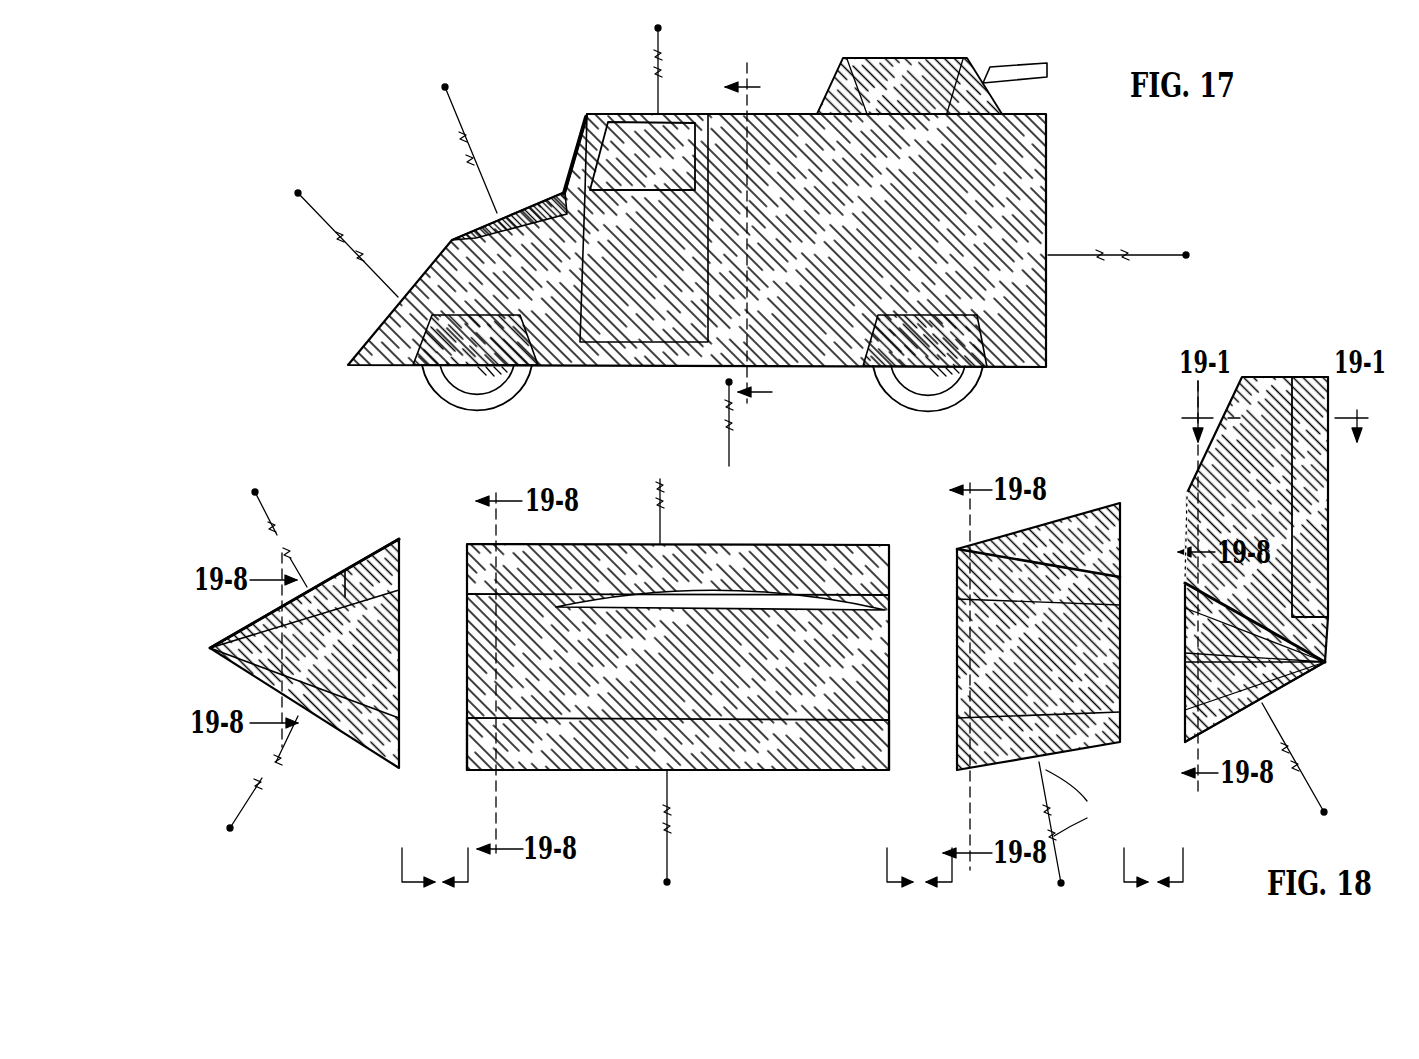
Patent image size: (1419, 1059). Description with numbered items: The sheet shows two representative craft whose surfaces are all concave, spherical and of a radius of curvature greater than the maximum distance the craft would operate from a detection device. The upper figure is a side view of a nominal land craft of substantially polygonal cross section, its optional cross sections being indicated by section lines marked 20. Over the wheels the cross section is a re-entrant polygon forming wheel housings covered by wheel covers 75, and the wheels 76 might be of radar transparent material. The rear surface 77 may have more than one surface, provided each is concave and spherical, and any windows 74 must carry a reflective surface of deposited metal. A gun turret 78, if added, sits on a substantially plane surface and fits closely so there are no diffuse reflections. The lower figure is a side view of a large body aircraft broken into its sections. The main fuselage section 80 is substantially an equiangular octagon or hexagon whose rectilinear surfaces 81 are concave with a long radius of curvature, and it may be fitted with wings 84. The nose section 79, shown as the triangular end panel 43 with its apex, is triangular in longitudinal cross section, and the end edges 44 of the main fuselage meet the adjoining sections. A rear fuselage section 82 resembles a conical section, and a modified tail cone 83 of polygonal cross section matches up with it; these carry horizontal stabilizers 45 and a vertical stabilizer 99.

In FIG. 17, the section line indicator 20 is at (320, 207).
In FIG. 18, the section line indicator 20 is at (260, 496).
In FIG. 17, the windows 74 is at (617, 140).
In FIG. 17, the wheel covers 75 is at (530, 370).
In FIG. 17, the wheels 76 is at (465, 382).
In FIG. 17, the rear surface 77 is at (1047, 153).
In FIG. 17, the gun turret 78 is at (818, 99).
In FIG. 18, the triangular end panel 43 is at (399, 546).
In FIG. 18, the panel end edge 44 is at (467, 745).
In FIG. 18, the horizontal stabilizers 45 is at (1183, 653).
In FIG. 18, the nose section 79 is at (210, 648).
In FIG. 18, the main fuselage section 80 is at (773, 544).
In FIG. 18, the rectilinear surfaces 81 is at (337, 575).
In FIG. 18, the rear fuselage section 82 is at (958, 567).
In FIG. 18, the tail cone 83 is at (1313, 650).
In FIG. 18, the wings 84 is at (617, 600).
In FIG. 18, the vertical stabilizer 99 is at (1202, 490).